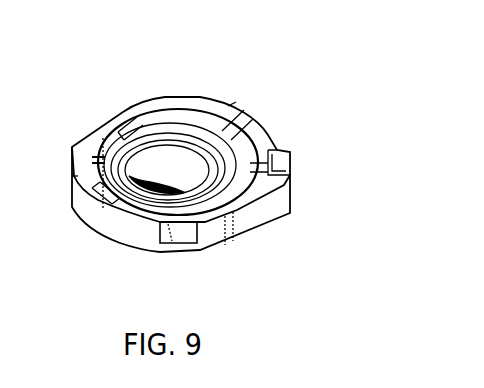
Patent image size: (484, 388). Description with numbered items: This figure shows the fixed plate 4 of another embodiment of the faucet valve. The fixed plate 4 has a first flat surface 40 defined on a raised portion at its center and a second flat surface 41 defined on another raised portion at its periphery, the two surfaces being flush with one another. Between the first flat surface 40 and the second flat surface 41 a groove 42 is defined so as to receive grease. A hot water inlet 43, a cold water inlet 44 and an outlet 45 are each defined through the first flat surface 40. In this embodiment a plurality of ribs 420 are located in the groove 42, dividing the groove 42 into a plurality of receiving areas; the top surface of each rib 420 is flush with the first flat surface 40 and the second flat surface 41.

The fixed plate 4 is at (296, 106).
The first flat surface 40 is at (98, 180).
The second flat surface 41 is at (141, 96).
The groove 42 is at (98, 136).
The hot water inlet 43 is at (298, 145).
The cold water inlet 44 is at (124, 112).
The outlet 45 is at (185, 245).
The ribs 420 is at (232, 104).